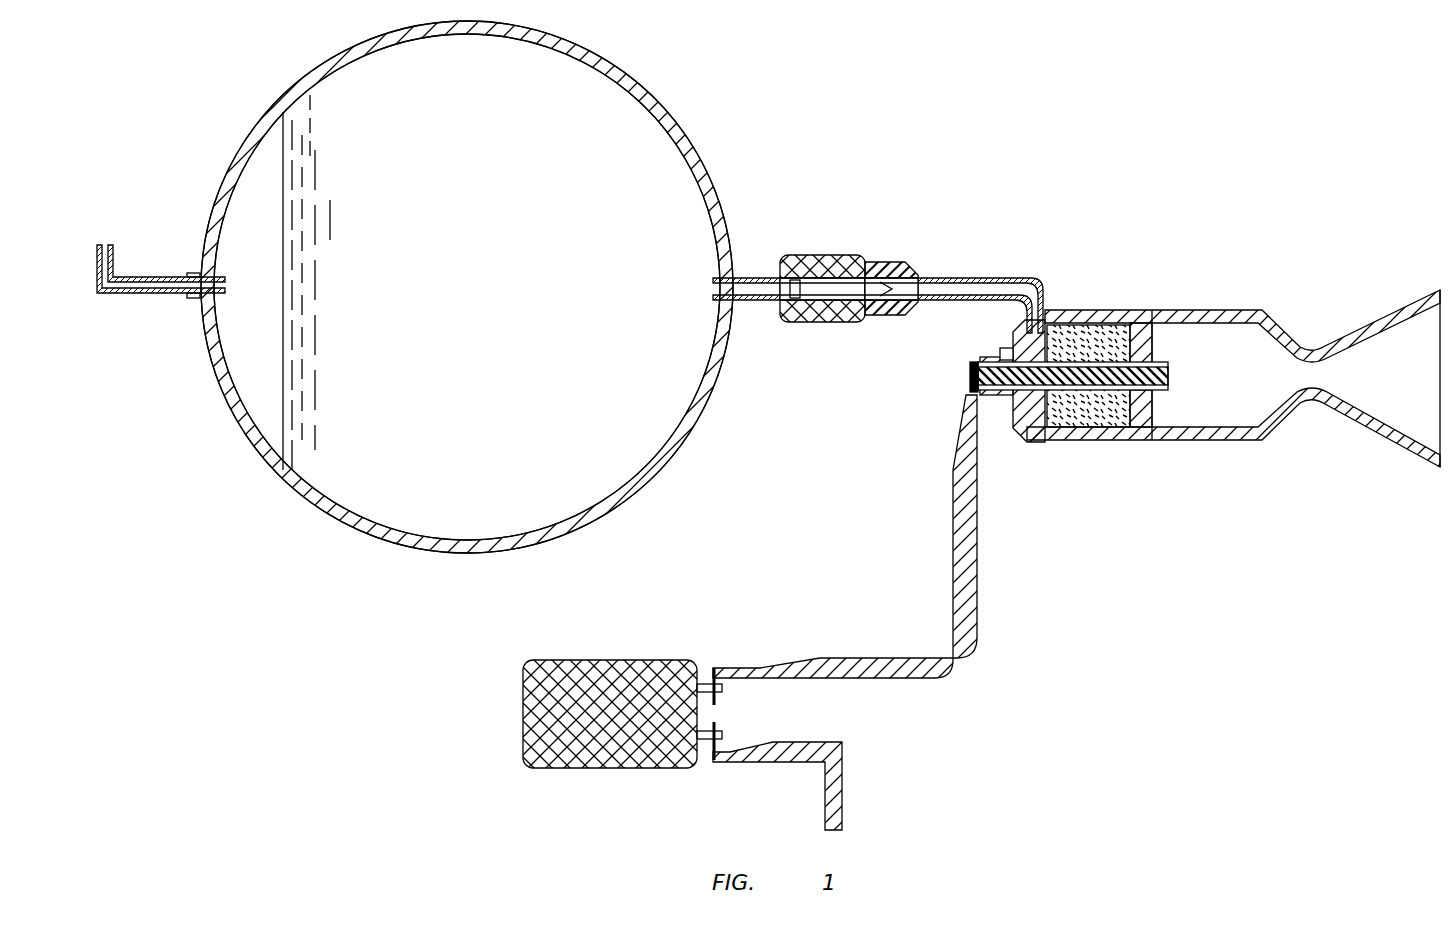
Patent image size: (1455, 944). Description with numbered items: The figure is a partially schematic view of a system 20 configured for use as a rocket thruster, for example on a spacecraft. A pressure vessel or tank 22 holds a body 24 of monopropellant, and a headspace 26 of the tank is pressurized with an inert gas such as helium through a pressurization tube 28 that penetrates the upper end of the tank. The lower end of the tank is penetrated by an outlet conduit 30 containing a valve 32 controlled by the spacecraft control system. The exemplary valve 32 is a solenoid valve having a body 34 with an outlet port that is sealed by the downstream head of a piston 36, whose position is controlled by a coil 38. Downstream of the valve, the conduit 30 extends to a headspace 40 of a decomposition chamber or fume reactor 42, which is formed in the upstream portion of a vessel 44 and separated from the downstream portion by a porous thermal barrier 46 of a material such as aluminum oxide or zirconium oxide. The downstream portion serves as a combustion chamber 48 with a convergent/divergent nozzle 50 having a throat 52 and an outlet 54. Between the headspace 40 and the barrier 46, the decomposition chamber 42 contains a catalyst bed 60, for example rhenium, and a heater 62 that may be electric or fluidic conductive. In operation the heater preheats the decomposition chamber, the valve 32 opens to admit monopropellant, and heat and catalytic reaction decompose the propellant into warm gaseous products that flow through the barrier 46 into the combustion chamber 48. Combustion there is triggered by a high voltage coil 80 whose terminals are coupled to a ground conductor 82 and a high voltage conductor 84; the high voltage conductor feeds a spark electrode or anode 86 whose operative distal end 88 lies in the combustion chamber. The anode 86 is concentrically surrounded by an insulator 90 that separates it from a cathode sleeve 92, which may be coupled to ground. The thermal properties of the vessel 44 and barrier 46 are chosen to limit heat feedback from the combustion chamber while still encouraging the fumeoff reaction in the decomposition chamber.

The system 20 is at (858, 183).
The tank 22 is at (697, 170).
The body of monopropellant 24 is at (453, 298).
The headspace 26 is at (234, 331).
The pressurization tube 28 is at (143, 296).
The outlet conduit 30 is at (738, 278).
The valve 32 is at (879, 239).
The valve body 34 is at (888, 318).
The piston 36 is at (890, 266).
The coil 38 is at (812, 318).
The headspace of decomposition chamber 40 is at (1037, 421).
The decomposition chamber 42 is at (1085, 411).
The vessel 44 is at (1093, 312).
The porous thermal barrier 46 is at (1173, 293).
The combustion chamber 48 is at (1208, 414).
The convergent/divergent nozzle 50 is at (1308, 423).
The throat 52 is at (1319, 388).
The outlet 54 is at (1434, 345).
The catalyst bed 60 is at (1100, 425).
The heater 62 is at (1000, 306).
The high voltage coil 80 is at (632, 647).
The ground conductor 82 is at (835, 790).
The high voltage conductor 84 is at (950, 670).
The spark electrode 86 is at (1152, 430).
The operative distal end 88 is at (1170, 382).
The insulator 90 is at (1008, 395).
The cathode sleeve 92 is at (1176, 364).